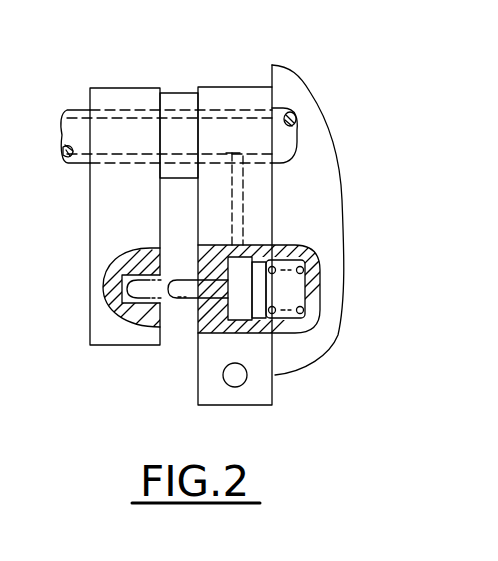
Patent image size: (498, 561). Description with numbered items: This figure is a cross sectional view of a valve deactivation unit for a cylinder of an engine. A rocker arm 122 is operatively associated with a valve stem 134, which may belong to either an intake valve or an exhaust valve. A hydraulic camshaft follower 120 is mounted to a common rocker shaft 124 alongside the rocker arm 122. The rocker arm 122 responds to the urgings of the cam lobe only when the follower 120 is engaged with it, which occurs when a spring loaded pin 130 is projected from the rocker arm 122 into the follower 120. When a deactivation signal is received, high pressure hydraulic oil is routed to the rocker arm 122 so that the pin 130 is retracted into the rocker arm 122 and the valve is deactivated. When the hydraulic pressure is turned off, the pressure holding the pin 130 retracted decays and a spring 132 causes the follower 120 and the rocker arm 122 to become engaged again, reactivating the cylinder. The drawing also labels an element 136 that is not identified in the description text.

The hydraulic camshaft follower 120 is at (113, 90).
The rocker arm 122 is at (215, 87).
The common rocker shaft 124 is at (90, 70).
The spring loaded pin 130 is at (192, 303).
The spring 132 is at (300, 258).
The valve stem 134 is at (247, 383).
The bolt / rod 136 is at (218, 250).